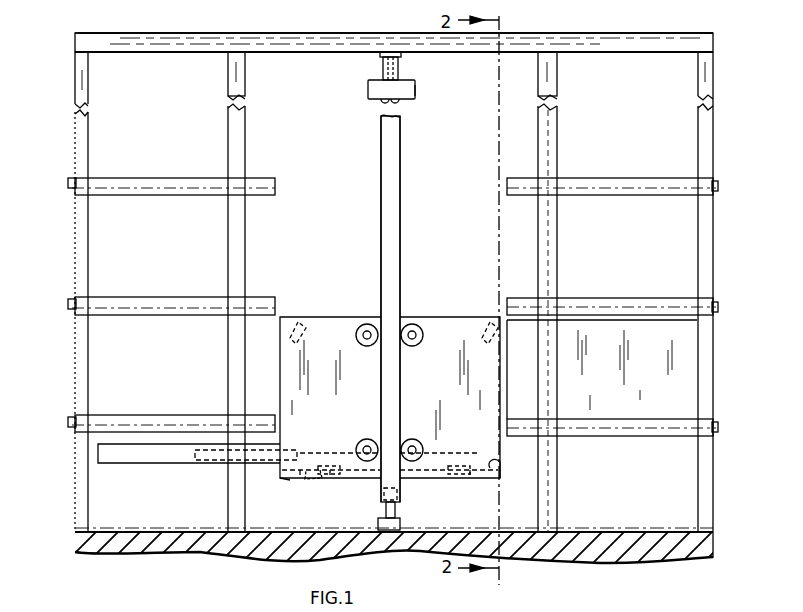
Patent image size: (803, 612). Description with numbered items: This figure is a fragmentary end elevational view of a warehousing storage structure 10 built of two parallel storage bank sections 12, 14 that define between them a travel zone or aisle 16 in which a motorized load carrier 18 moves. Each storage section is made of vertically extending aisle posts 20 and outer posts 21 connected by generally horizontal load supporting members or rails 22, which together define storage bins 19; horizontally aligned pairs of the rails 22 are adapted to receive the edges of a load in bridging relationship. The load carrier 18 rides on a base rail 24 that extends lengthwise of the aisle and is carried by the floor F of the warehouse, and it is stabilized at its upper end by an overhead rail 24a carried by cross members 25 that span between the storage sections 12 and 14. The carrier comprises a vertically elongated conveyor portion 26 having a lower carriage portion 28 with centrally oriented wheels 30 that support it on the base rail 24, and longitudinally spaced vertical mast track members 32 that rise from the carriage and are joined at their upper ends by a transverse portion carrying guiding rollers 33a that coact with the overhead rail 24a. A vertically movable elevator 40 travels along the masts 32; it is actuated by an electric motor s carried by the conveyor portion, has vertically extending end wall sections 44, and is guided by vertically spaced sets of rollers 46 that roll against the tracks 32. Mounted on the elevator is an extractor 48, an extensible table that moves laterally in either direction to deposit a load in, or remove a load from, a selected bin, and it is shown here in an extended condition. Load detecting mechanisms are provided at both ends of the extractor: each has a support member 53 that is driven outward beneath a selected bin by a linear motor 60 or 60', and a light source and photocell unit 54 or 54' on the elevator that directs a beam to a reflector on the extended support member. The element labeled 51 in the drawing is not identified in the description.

The skeletal storage structure 10 is at (716, 92).
The storage bank section 12 is at (713, 254).
The storage bank section 14 is at (72, 232).
The travel zone or aisle 16 is at (296, 75).
The load carrier 18 is at (402, 292).
The storage bins 19 is at (108, 143).
The aisle posts 20 is at (228, 510).
The outer posts 21 is at (75, 494).
The load supporting members or rails 22 is at (178, 194).
The base rail 24 is at (400, 526).
The overhead rail 24a is at (402, 57).
The cross members 25 is at (205, 32).
The conveyor portion 26 is at (381, 180).
The lower carriage portion 28 is at (380, 490).
The wheels 30 is at (396, 510).
The vertical track members 32 is at (400, 198).
The guiding rollers 33a is at (380, 63).
The elevator 40 is at (330, 317).
The end wall sections 44 is at (438, 326).
The rollers 46 is at (366, 347).
The extractor 48 is at (130, 455).
The latch member 51 is at (462, 470).
The support member 53 is at (286, 480).
The light source and associated photocell 54 is at (506, 301).
The light source and associated photocell 54' is at (290, 303).
The linear motor 60 is at (449, 485).
The linear motor 60' is at (331, 448).
The floor F is at (690, 532).
The electric motor s is at (415, 90).